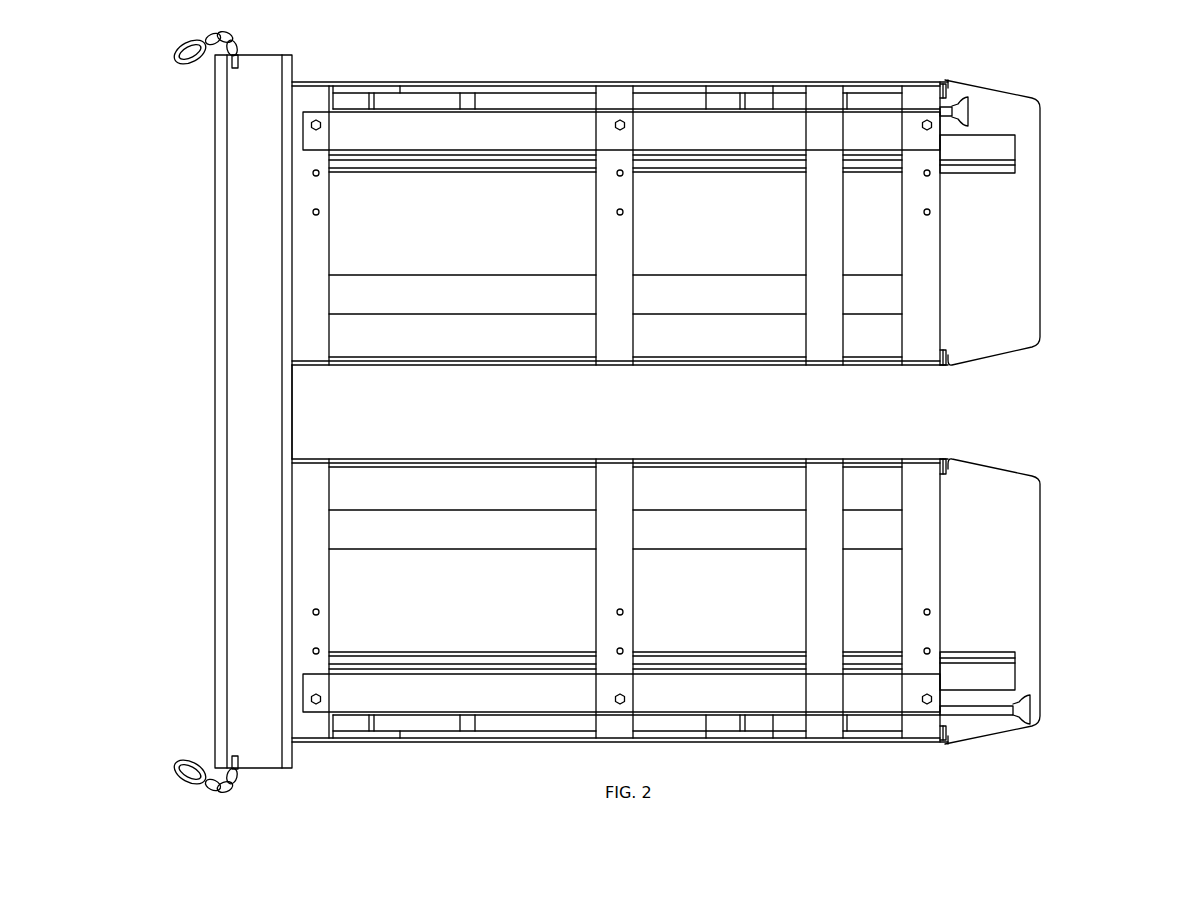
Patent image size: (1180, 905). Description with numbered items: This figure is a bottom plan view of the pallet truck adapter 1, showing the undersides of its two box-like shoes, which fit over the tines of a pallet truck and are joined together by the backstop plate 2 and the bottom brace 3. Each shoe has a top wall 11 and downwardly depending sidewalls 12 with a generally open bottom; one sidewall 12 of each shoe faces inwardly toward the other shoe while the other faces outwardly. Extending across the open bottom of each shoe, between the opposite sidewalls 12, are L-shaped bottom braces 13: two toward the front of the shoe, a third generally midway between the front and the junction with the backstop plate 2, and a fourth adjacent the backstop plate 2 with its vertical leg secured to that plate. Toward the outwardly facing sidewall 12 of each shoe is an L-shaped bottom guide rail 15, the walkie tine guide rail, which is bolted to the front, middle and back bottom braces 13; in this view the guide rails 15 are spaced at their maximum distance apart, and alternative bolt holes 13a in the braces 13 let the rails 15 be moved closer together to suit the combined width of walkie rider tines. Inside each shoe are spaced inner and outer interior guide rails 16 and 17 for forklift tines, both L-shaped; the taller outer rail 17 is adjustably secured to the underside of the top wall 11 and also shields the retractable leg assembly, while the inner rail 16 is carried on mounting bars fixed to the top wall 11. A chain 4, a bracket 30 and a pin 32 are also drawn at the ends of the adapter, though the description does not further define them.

The pallet truck adapter 1 is at (1137, 102).
The backstop plate 2 is at (292, 397).
The bottom brace 3 is at (248, 368).
The chain 4 is at (180, 50).
The top wall 11 is at (1016, 232).
The sidewall 12 is at (665, 81).
The bottom brace 13 is at (319, 252).
The alternative bolt hole 13a is at (320, 174).
The bottom guide rail 15 is at (721, 140).
The inner interior guide rail 16 is at (479, 307).
The outer interior guide rail 17 is at (516, 176).
The bracket 30 is at (947, 98).
The pin 32 is at (966, 108).